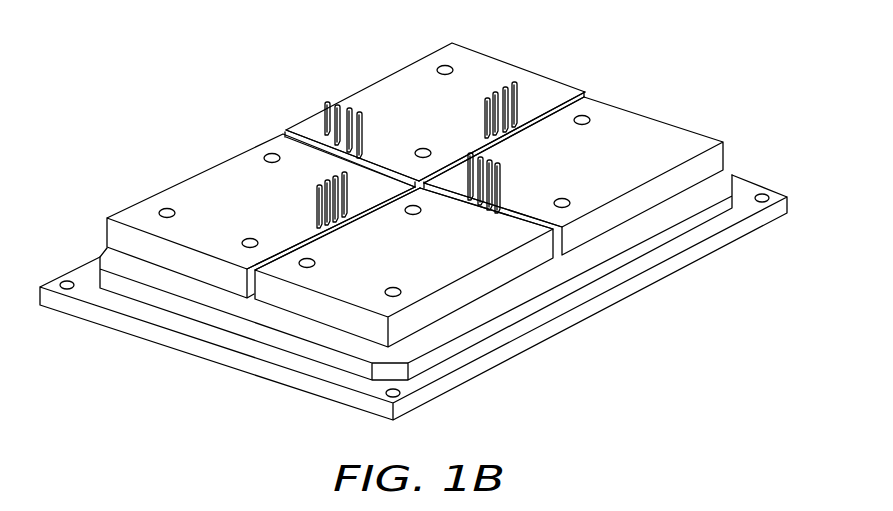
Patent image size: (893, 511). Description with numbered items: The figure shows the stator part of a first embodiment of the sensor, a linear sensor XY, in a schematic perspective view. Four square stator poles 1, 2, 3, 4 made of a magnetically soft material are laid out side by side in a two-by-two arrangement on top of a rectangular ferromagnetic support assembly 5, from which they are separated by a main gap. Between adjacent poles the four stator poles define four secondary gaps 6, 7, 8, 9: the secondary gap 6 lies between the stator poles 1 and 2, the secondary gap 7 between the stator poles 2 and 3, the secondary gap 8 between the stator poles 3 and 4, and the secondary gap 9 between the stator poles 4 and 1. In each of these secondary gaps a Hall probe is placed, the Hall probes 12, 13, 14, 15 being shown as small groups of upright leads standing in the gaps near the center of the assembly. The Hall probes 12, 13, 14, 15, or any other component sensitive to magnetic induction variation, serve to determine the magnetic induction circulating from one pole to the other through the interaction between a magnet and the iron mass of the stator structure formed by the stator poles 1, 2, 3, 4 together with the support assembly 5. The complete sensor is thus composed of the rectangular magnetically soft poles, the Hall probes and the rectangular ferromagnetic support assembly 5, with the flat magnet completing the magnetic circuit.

The stator pole 1 is at (467, 58).
The stator pole 2 is at (652, 123).
The stator pole 3 is at (402, 302).
The stator pole 4 is at (203, 182).
The ferromagnetic support assembly 5 is at (723, 185).
The secondary gap 6 is at (585, 93).
The secondary gap 7 is at (520, 218).
The secondary gap 8 is at (302, 243).
The secondary gap 9 is at (293, 135).
The Hall probe 12 is at (485, 103).
The Hall probe 13 is at (503, 175).
The Hall probe 14 is at (317, 197).
The Hall probe 15 is at (360, 120).